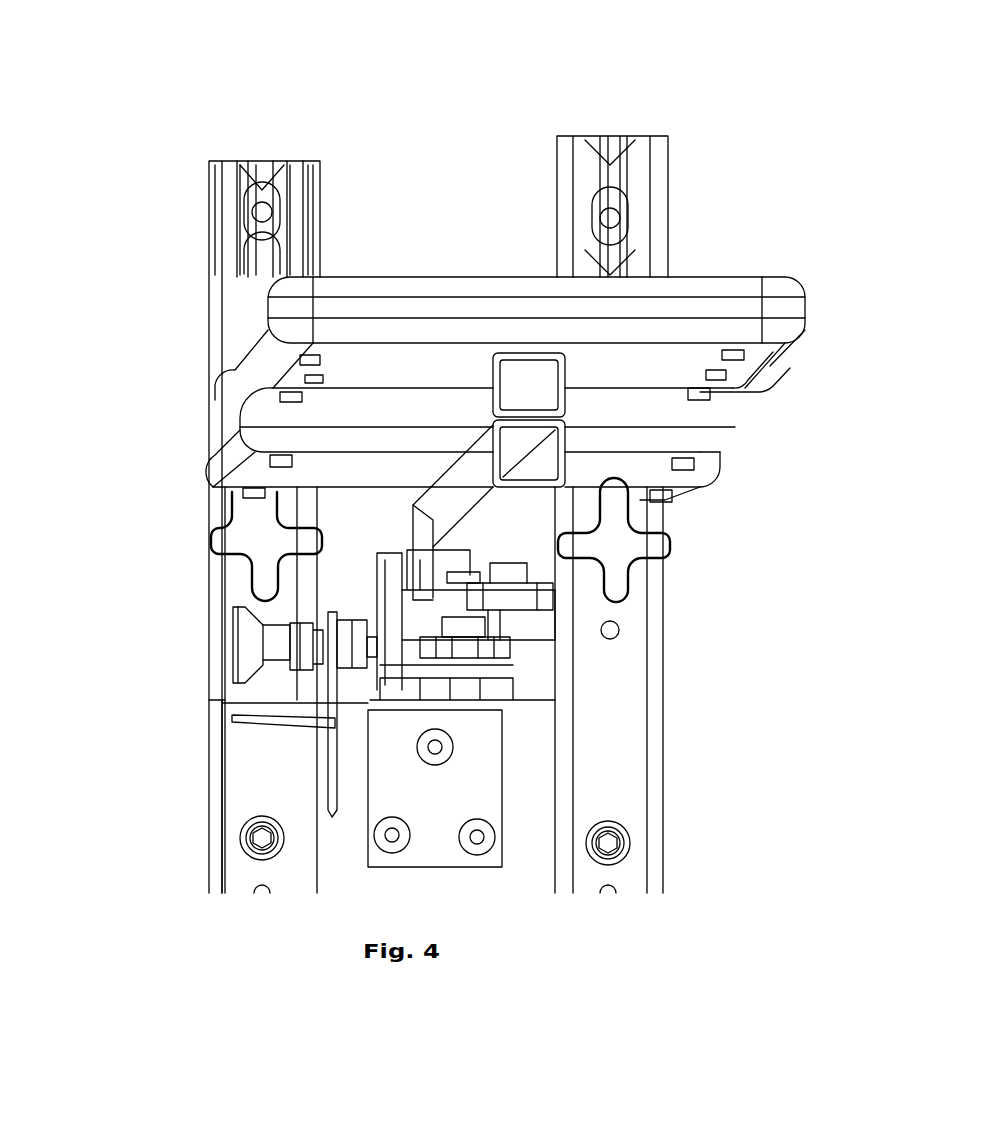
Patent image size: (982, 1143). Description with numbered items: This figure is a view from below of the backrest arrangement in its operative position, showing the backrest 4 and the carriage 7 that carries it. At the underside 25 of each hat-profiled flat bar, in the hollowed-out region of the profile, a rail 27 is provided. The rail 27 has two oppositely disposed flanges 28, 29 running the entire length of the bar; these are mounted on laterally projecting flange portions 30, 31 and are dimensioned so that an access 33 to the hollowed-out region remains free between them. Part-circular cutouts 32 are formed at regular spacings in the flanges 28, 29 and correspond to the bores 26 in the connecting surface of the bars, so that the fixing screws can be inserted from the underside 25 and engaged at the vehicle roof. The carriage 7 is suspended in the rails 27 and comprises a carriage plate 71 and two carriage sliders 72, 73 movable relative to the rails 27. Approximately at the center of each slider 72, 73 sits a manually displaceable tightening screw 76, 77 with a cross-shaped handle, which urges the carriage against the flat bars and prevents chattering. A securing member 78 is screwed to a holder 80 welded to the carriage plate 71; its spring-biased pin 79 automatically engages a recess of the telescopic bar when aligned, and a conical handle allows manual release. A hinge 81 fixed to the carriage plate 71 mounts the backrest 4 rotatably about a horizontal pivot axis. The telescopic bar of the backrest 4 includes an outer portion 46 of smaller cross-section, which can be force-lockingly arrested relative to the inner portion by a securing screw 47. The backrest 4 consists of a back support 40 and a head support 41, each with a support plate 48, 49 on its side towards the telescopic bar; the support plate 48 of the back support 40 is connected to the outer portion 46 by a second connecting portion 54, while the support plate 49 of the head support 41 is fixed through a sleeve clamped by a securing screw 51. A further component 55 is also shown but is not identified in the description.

The backrest 4 is at (188, 405).
The carriage 7 is at (684, 875).
The underside 25 is at (560, 187).
The bore 26 is at (265, 207).
The rail 27 is at (262, 157).
The flange 28 is at (292, 177).
The flange 29 is at (243, 183).
The flange portion 30 is at (313, 250).
The flange portion 31 is at (220, 227).
The part-circular cutout 32 is at (312, 212).
The access 33 is at (265, 260).
The back support 40 is at (673, 427).
The head support 41 is at (633, 303).
The outer portion 46 is at (493, 467).
The securing screw 47 is at (502, 598).
The support plate 48 is at (690, 368).
The support plate 49 is at (663, 507).
The securing screw 51 is at (475, 643).
The second connecting portion 54 is at (497, 403).
The clamp bracket 55 is at (373, 600).
The carriage plate 71 is at (265, 777).
The carriage slider 72 is at (613, 690).
The carriage slider 73 is at (245, 588).
The tightening screw 76 is at (613, 568).
The tightening screw 77 is at (263, 532).
The securing member 78 is at (267, 643).
The pin 79 is at (385, 642).
The holder 80 is at (330, 797).
The hinge 81 is at (433, 832).